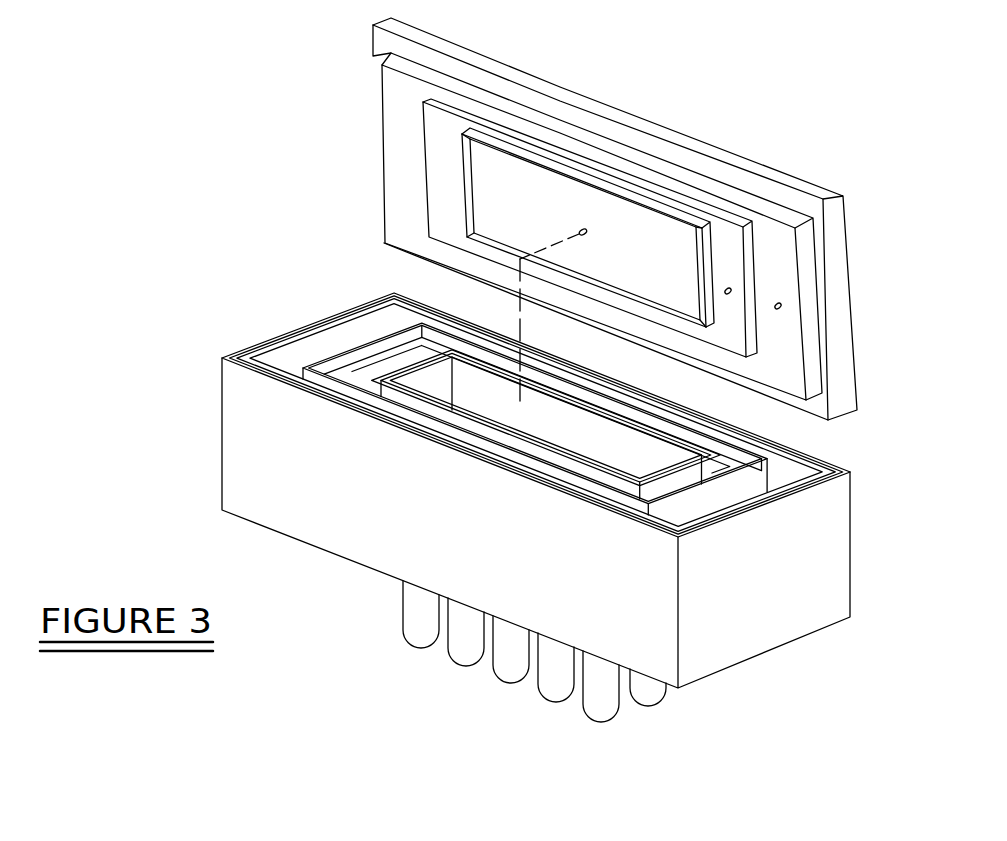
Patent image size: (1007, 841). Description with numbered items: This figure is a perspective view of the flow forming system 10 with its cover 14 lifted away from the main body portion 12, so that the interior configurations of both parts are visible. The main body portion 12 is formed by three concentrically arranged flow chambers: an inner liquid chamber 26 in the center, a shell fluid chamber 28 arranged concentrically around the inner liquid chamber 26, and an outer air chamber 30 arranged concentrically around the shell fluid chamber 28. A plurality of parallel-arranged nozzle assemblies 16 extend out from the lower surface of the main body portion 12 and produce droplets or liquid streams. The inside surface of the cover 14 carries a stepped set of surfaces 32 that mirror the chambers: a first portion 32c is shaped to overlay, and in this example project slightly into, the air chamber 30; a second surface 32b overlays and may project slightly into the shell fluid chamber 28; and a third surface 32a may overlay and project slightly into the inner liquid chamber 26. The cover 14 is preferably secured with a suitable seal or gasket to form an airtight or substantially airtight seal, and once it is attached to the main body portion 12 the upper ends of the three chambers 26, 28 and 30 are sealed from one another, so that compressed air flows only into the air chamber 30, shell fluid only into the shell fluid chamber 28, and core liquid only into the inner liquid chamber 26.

The system 10 is at (501, 370).
The main body portion 12 is at (248, 450).
The cover 14 is at (823, 200).
The nozzle assemblies 16 is at (418, 608).
The inner liquid chamber 26 is at (568, 428).
The shell fluid chamber 28 is at (401, 357).
The air chamber 30 is at (302, 363).
The stepped seal frame stack 32 is at (552, 216).
The third surface 32a is at (483, 218).
The second surface 32b is at (440, 153).
The first portion 32c is at (386, 105).